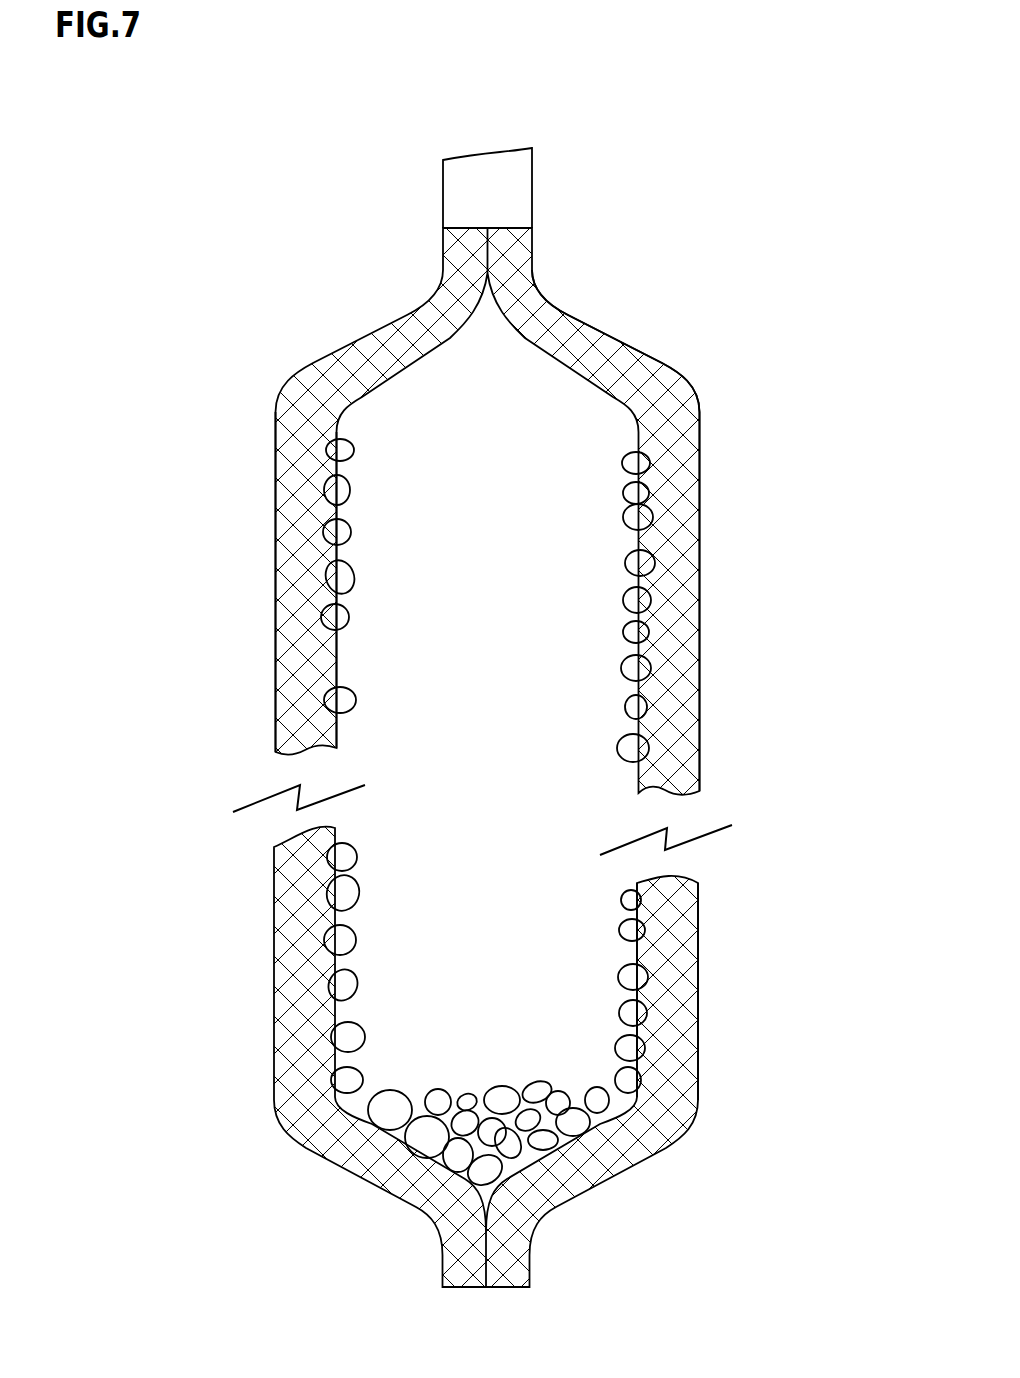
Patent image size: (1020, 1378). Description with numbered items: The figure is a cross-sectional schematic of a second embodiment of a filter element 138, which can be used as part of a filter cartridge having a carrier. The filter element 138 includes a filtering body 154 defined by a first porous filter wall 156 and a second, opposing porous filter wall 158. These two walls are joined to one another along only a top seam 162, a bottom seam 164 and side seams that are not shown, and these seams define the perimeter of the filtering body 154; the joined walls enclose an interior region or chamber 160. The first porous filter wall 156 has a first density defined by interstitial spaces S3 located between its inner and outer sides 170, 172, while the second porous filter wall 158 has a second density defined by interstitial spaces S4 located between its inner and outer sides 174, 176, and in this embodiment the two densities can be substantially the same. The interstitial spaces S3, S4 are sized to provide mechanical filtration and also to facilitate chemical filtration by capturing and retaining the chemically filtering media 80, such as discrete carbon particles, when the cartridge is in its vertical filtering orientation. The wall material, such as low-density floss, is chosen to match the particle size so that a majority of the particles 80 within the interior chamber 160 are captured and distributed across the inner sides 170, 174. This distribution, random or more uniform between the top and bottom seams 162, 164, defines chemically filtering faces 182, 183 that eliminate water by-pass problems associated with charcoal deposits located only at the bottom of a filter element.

The filter element 138 is at (280, 340).
The top seam 162 is at (488, 228).
The filtering body 154 is at (657, 347).
The first porous filter wall 156 is at (700, 532).
The second porous filter wall 158 is at (275, 532).
The inner side 174 is at (337, 652).
The outer side 176 is at (275, 715).
The outer side 172 is at (698, 943).
The inner side 170 is at (637, 953).
The bottom seam 164 is at (485, 1287).
The interior chamber 160 is at (508, 672).
The chemically filtering face 182 is at (368, 548).
The chemically filtering face 183 is at (575, 727).
The interstitial spaces S3 is at (650, 517).
The interstitial spaces S4 is at (318, 623).
The chemically filtering media 80 is at (347, 528).